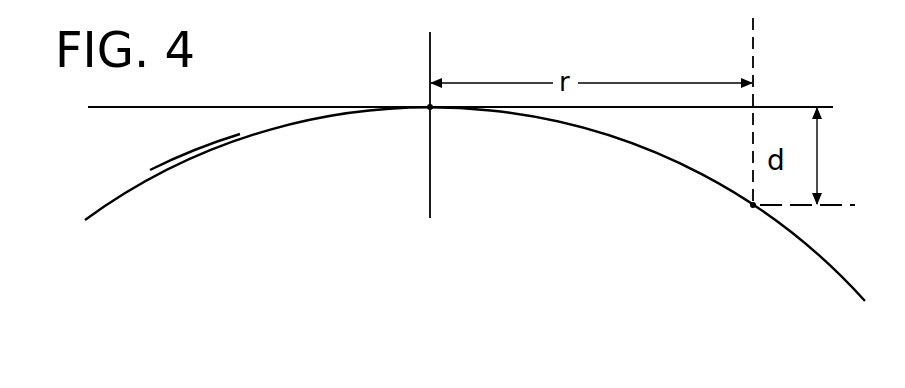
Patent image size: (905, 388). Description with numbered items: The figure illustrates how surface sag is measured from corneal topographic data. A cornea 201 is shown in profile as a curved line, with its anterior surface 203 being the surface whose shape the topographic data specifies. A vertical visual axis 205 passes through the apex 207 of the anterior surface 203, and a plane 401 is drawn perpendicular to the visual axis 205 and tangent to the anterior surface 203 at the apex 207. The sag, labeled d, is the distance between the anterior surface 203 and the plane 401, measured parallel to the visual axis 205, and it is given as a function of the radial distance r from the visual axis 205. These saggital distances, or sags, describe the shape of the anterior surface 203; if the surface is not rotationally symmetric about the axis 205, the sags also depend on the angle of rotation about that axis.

The cornea 201 is at (132, 220).
The anterior surface 203 is at (195, 154).
The visual axis 205 is at (430, 43).
The apex 207 is at (432, 109).
The plane 401 is at (786, 107).